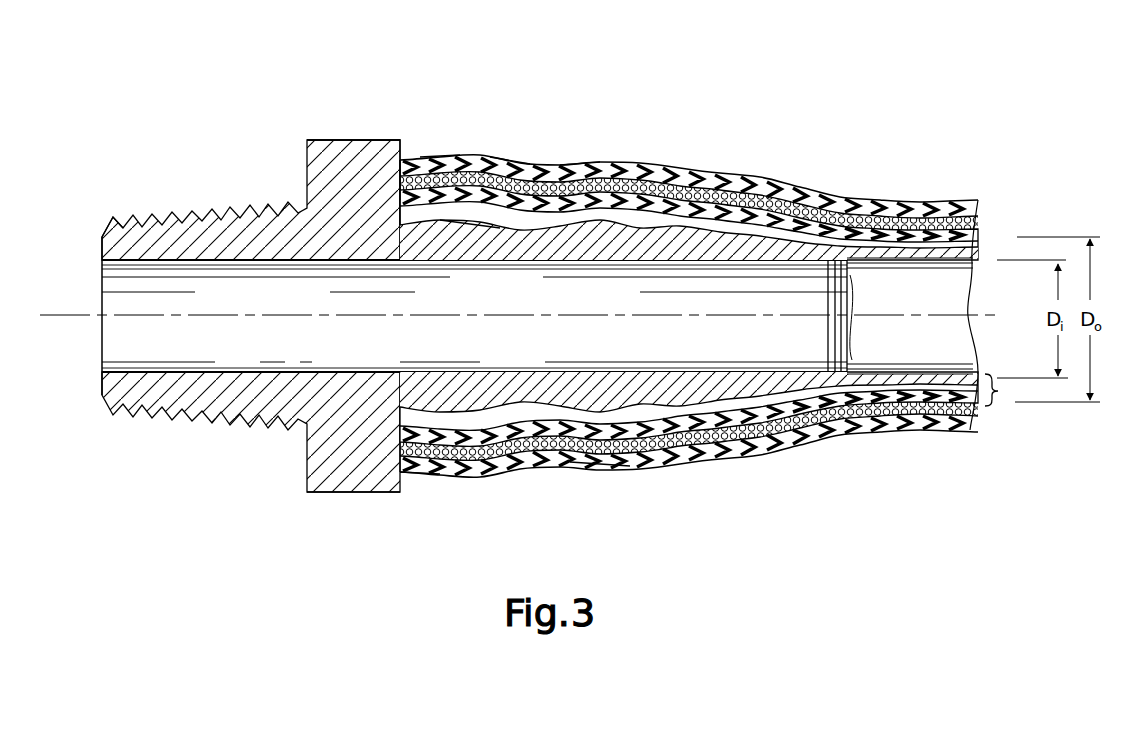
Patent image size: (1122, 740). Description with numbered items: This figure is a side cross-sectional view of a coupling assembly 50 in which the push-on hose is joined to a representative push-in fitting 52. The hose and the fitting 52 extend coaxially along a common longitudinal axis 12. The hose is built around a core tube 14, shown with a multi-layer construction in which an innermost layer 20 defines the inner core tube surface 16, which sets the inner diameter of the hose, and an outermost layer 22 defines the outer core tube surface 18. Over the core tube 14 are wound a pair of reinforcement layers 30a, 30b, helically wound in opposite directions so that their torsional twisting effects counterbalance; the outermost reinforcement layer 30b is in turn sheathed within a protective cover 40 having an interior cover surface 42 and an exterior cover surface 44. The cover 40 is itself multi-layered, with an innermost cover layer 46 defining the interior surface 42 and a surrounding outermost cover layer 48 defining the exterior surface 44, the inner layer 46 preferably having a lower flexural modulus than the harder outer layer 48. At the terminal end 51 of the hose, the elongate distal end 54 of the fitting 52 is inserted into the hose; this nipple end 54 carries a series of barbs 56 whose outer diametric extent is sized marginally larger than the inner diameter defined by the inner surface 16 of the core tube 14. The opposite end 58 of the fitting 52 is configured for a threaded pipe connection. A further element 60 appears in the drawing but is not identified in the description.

The longitudinal axis 12 is at (82, 318).
The core tube 14 is at (747, 291).
The inner core tube surface 16 is at (445, 165).
The outer core tube surface 18 is at (470, 202).
The innermost layer 20 is at (985, 250).
The outermost layer 22 is at (986, 243).
The reinforcement layer 30a is at (985, 234).
The reinforcement layer 30b is at (983, 218).
The cover 40 is at (998, 391).
The interior cover surface 42 is at (508, 167).
The exterior cover surface 44 is at (575, 160).
The innermost cover layer 46 is at (374, 170).
The outermost cover layer 48 is at (395, 165).
The coupling assembly 50 is at (895, 100).
The terminal end 51 is at (420, 475).
The push-in fitting 52 is at (382, 456).
The distal end 54 is at (848, 266).
The barb 56 is at (600, 463).
The opposite end 58 is at (102, 250).
The bead layer 60 is at (984, 226).